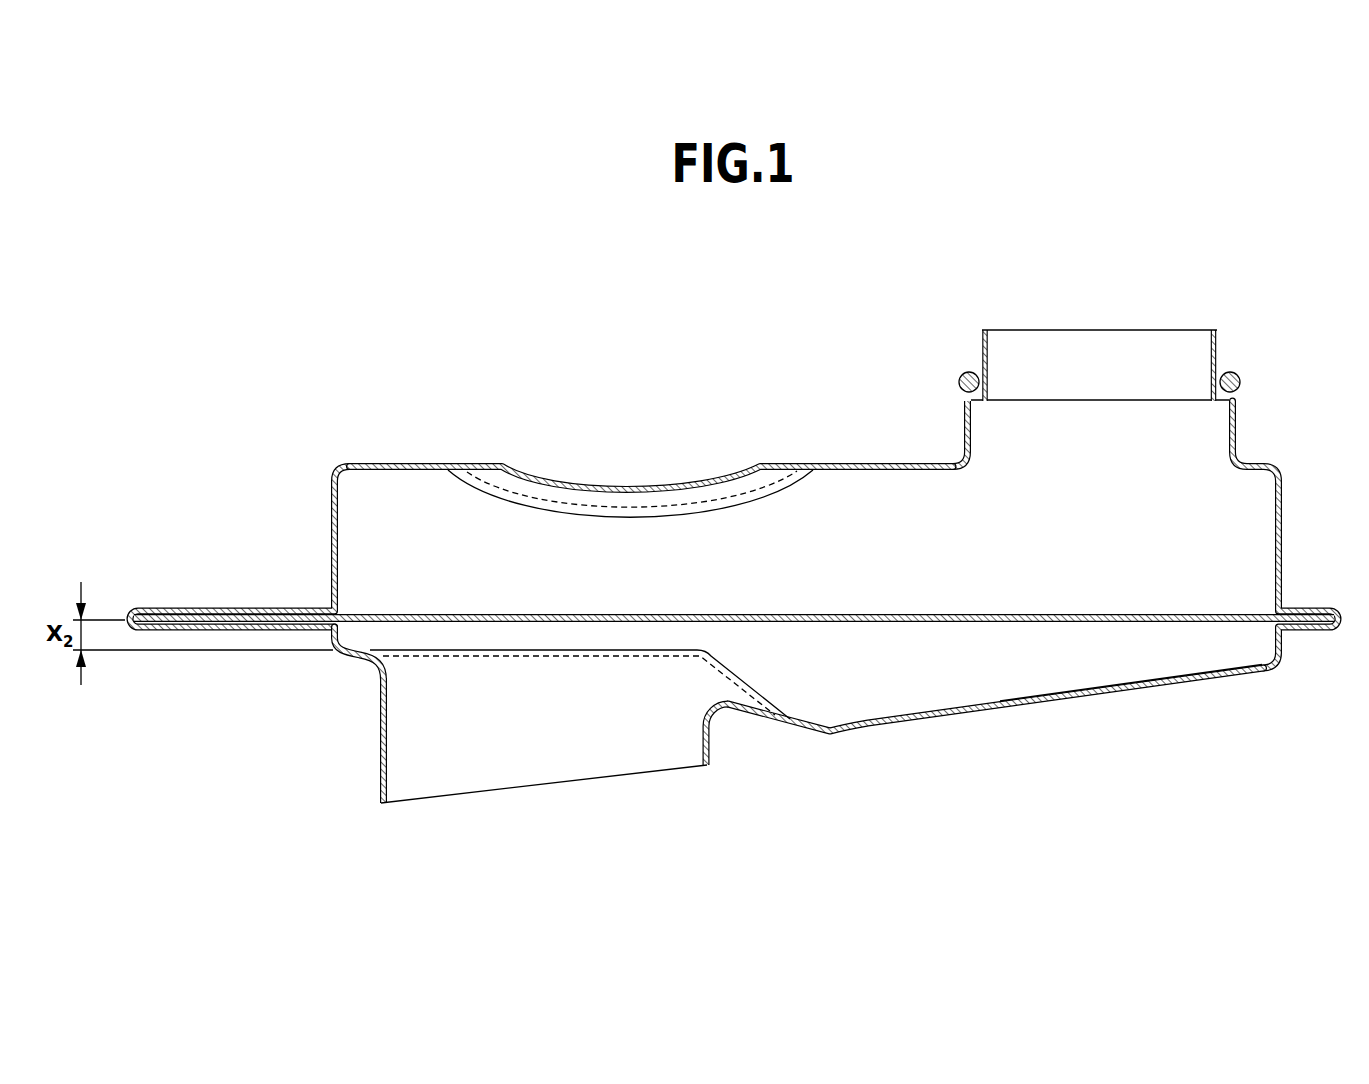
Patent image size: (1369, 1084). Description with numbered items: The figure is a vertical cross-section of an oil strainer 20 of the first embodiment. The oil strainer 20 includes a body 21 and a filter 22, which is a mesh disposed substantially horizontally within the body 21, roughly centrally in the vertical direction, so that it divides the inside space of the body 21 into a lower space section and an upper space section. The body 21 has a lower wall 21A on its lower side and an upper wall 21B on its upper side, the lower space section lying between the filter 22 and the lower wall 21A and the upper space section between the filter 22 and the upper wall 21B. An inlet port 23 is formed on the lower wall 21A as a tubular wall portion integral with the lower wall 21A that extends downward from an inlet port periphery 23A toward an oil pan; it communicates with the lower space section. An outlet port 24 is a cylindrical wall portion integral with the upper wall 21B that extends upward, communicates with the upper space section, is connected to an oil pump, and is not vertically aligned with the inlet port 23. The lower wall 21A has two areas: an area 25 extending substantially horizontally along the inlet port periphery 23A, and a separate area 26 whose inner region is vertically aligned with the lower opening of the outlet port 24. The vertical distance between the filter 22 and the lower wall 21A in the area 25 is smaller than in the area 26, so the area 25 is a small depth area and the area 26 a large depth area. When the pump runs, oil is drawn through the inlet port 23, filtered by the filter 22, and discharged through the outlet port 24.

The oil strainer 20 is at (795, 378).
The body 21 is at (330, 541).
The lower wall 21A is at (1007, 709).
The upper wall 21B is at (875, 462).
The filter 22 is at (1117, 612).
The inlet port 23 is at (602, 727).
The inlet port periphery 23A is at (377, 659).
The outlet port 24 is at (1162, 366).
The area 25 is at (632, 651).
The area 26 is at (1086, 690).